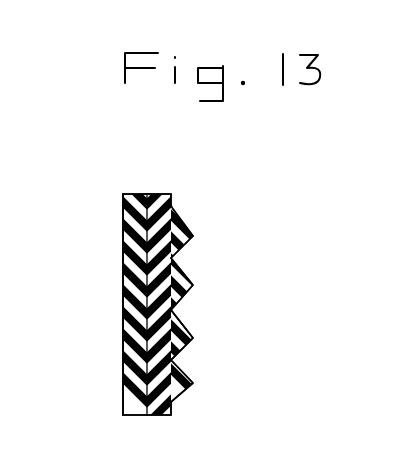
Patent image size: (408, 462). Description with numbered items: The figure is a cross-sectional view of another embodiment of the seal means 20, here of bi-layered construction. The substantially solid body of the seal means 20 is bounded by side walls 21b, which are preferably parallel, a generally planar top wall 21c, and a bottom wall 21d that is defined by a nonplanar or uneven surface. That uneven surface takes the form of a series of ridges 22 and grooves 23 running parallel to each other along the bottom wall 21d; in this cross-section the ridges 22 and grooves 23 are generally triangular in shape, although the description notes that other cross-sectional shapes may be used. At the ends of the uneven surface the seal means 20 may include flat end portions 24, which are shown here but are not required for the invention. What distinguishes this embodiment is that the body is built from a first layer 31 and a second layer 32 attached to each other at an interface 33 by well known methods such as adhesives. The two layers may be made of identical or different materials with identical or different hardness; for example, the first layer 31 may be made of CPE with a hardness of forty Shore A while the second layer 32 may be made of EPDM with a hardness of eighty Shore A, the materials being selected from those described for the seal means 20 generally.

The seal means 20 is at (104, 155).
The side walls 21b is at (155, 193).
The top wall 21c is at (123, 323).
The bottom wall 21d is at (246, 307).
The ridges 22 is at (193, 237).
The grooves 23 is at (173, 258).
The flat end portions 24 is at (172, 202).
The first layer 31 is at (123, 270).
The second layer 32 is at (184, 326).
The interface 33 is at (143, 370).